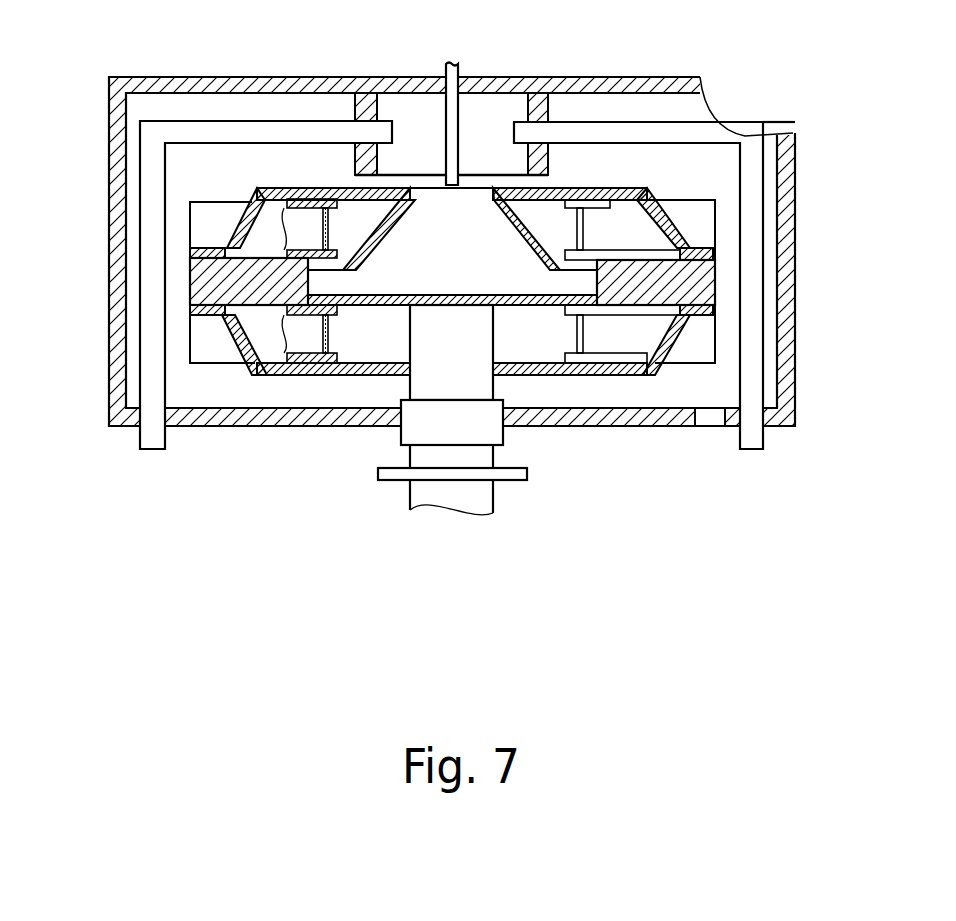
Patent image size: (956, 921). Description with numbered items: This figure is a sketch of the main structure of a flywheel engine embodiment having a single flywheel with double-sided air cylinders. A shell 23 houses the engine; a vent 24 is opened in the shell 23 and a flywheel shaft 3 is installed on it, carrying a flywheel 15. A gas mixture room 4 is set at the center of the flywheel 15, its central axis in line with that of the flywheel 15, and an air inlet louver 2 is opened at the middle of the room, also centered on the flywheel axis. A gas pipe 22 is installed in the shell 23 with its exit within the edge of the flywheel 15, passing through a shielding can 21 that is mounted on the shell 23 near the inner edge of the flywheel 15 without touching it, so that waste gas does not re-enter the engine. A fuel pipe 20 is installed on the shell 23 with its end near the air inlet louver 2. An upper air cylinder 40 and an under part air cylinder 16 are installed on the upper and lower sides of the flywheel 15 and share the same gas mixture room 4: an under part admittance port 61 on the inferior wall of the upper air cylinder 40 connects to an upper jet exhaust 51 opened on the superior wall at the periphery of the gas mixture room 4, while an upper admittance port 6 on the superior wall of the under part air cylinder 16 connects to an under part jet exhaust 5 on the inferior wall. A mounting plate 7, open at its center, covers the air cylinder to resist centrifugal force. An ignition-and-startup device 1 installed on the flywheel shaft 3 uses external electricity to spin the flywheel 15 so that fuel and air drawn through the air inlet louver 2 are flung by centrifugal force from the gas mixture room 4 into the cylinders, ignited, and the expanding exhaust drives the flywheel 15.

The ignition-and-startup device 1 is at (393, 473).
The air inlet louver 2 is at (425, 185).
The flywheel shaft 3 is at (477, 502).
The gas mixture room 4 is at (470, 257).
The under part jet exhaust 5 is at (290, 312).
The upper admittance port 6 is at (293, 323).
The mounting plate 7 is at (645, 192).
The flywheel 15 is at (252, 287).
The under part air cylinder 16 is at (200, 335).
The fuel pipe 20 is at (453, 122).
The shielding can 21 is at (367, 107).
The gas pipe 22 is at (588, 130).
The shell 23 is at (748, 110).
The vent 24 is at (713, 417).
The upper air cylinder 40 is at (213, 222).
The upper jet exhaust 51 is at (317, 267).
The under part admittance port 61 is at (313, 265).